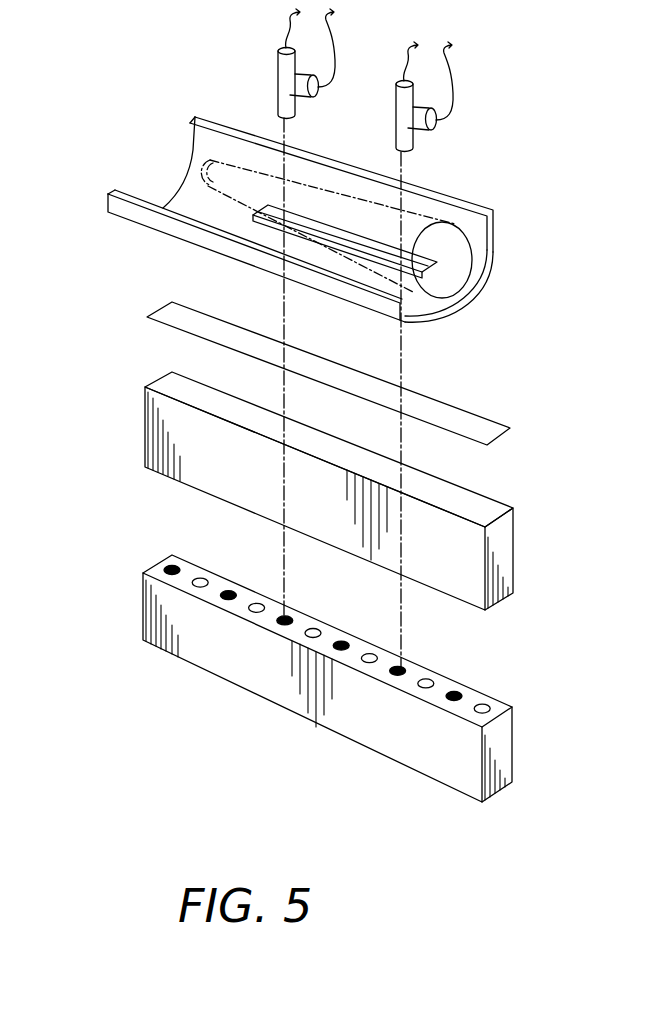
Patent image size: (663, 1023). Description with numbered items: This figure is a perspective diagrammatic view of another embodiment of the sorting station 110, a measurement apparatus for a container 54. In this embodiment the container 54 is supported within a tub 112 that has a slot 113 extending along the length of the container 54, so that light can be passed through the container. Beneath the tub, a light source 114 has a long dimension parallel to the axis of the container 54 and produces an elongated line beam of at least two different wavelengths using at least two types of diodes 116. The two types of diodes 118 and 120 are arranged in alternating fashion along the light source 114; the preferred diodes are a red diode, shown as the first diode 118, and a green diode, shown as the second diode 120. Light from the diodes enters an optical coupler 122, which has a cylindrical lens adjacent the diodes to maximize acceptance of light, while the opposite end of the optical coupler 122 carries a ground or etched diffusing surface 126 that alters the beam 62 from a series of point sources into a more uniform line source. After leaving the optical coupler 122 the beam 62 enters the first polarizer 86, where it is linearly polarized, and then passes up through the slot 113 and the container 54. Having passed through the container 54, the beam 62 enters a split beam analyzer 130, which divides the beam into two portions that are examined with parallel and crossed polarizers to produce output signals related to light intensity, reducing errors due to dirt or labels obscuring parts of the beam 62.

The sorting station 110 is at (117, 120).
The split beam analyzer 130 is at (278, 88).
The beam 62 is at (398, 163).
The container 54 is at (470, 300).
The tub 112 is at (108, 212).
The slot 113 is at (440, 268).
The first polarizer 86 is at (150, 312).
The diffusing surface 126 is at (492, 510).
The optical coupler 122 is at (360, 491).
The light source 114 is at (291, 678).
The diodes 116 is at (199, 589).
The first diode 118 is at (369, 664).
The second diode 120 is at (398, 677).